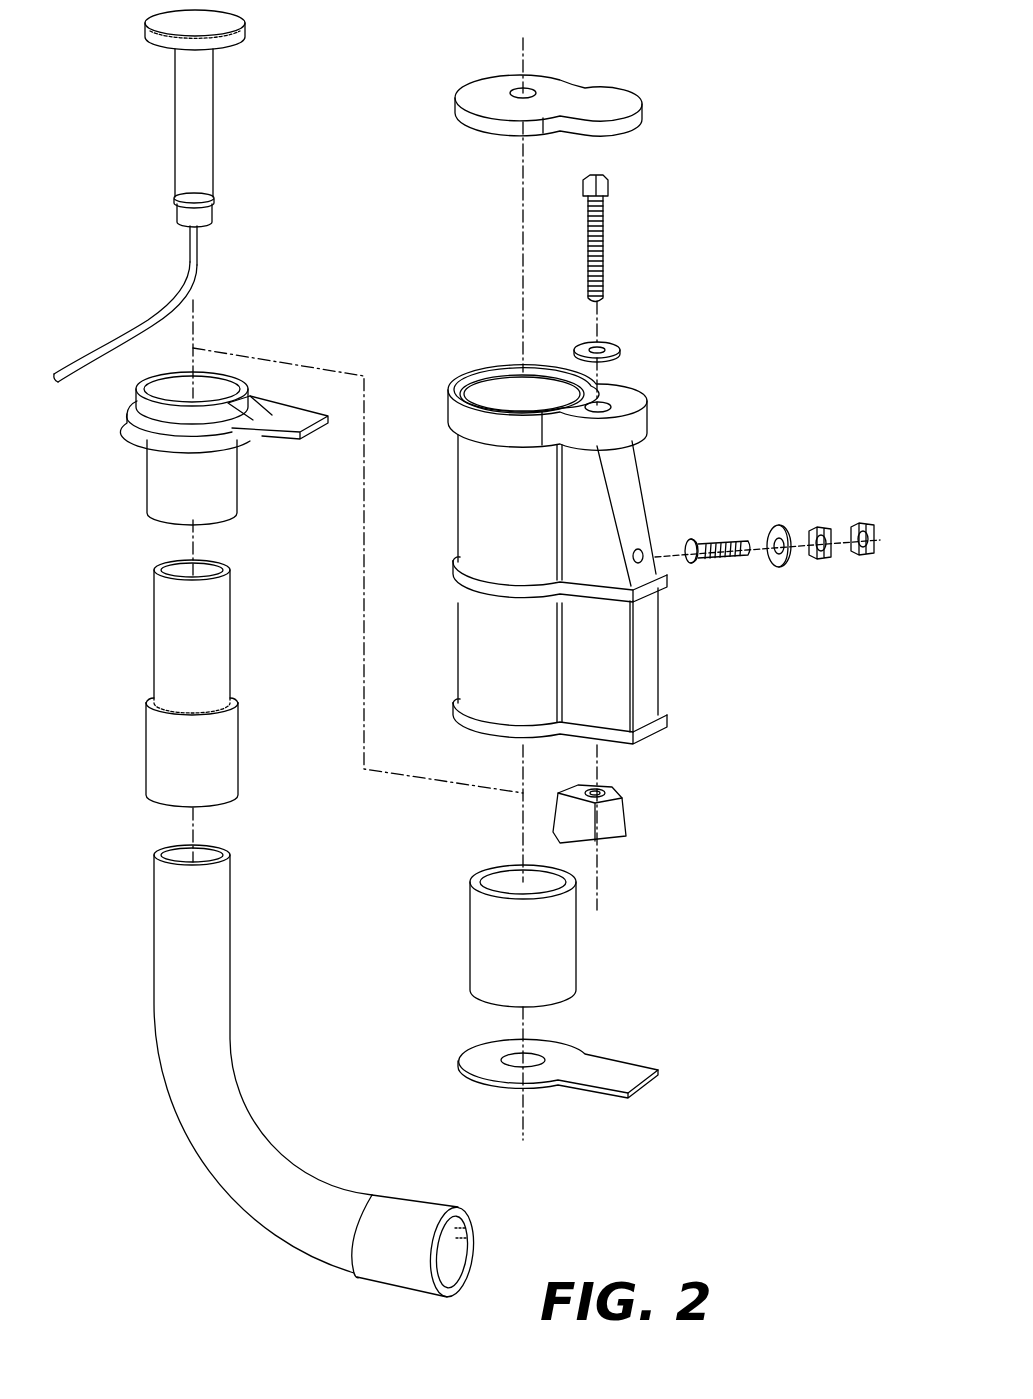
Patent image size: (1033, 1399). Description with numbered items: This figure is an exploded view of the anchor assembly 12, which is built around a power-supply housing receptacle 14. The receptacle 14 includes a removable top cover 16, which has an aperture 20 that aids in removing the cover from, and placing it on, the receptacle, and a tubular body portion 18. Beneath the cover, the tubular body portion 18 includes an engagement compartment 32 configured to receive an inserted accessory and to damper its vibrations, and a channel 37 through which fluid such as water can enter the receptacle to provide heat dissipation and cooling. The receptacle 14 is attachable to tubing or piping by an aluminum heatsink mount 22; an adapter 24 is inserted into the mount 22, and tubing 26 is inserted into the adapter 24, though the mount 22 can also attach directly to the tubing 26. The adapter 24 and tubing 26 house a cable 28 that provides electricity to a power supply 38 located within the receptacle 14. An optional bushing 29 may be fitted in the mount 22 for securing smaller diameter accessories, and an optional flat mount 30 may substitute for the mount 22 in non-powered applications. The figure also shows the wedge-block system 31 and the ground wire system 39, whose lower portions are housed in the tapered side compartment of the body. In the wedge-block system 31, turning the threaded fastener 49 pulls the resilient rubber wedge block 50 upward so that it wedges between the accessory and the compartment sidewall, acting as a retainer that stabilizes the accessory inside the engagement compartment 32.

The anchor assembly 12 is at (806, 122).
The power-supply housing receptacle 14 is at (686, 472).
The top cover 16 is at (598, 100).
The tubular body portion 18 is at (430, 386).
The aperture 20 is at (531, 88).
The heatsink mount 22 is at (168, 478).
The adapter 24 is at (182, 643).
The tubing 26 is at (207, 1126).
The cable 28 is at (140, 325).
The bushing 29 is at (556, 955).
The flat mount 30 is at (617, 1073).
The wedge-block system 31 is at (646, 780).
The engagement compartment 32 is at (503, 392).
The channel 37 is at (598, 407).
The power supply 38 is at (196, 117).
The ground wire system 39 is at (735, 577).
The threaded fastener 49 is at (604, 246).
The wedge block 50 is at (612, 818).